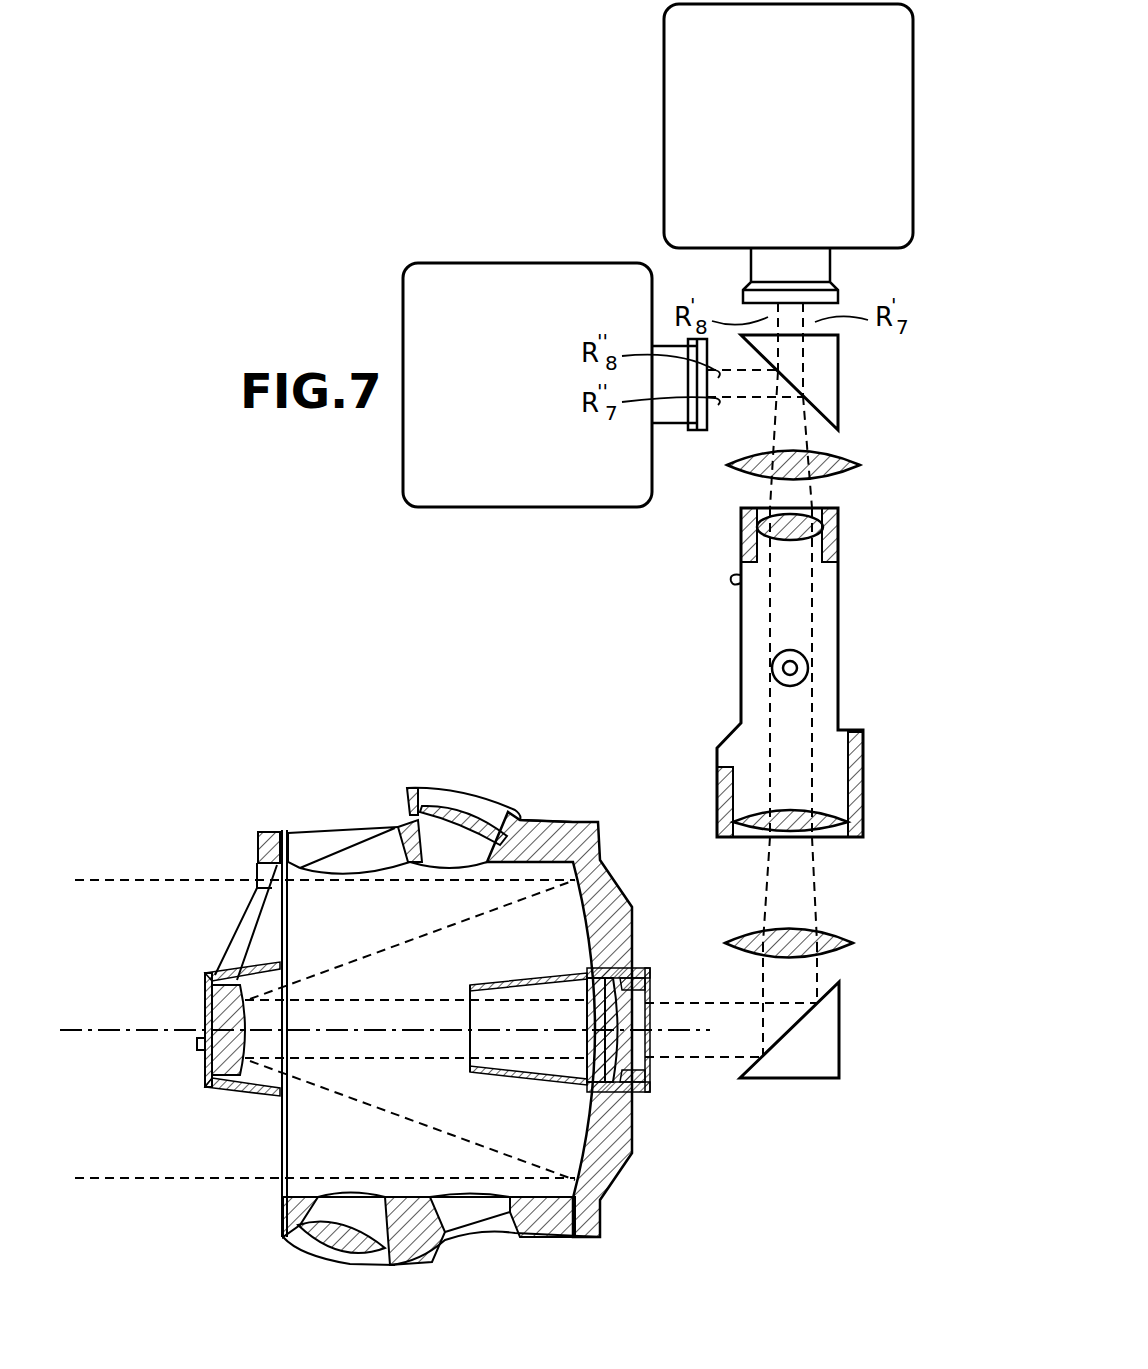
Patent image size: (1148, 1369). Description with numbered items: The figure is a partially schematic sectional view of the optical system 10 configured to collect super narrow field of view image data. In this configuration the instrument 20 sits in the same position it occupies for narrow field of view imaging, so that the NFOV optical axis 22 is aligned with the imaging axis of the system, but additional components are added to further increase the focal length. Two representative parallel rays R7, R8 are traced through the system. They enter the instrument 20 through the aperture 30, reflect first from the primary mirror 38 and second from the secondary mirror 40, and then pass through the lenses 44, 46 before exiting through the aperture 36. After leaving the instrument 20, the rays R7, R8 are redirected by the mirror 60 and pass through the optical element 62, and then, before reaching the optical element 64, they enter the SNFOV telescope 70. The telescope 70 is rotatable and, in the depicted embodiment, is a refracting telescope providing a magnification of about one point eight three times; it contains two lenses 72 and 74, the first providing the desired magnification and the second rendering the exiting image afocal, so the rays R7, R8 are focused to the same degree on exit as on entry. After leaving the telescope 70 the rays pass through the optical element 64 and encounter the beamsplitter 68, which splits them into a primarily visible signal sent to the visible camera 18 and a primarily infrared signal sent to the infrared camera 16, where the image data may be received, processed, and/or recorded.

The optical system 10 is at (386, 182).
The infrared camera 16 is at (542, 387).
The visible camera 18 is at (806, 134).
The instrument 20 is at (535, 1265).
The NFOV optical axis 22 is at (104, 1036).
The aperture 30 is at (252, 893).
The aperture 36 is at (648, 1000).
The primary mirror 38 is at (582, 934).
The secondary mirror 40 is at (258, 1046).
The lens 44 is at (582, 1043).
The lens 46 is at (620, 1045).
The mirror 60 is at (790, 1030).
The optical element 62 is at (853, 941).
The optical element 64 is at (860, 462).
The beamsplitter 68 is at (825, 407).
The SNFOV telescope 70 is at (784, 693).
The lens 72 is at (752, 830).
The lens 74 is at (798, 528).
The ray R7 is at (115, 878).
The ray R8 is at (116, 1186).